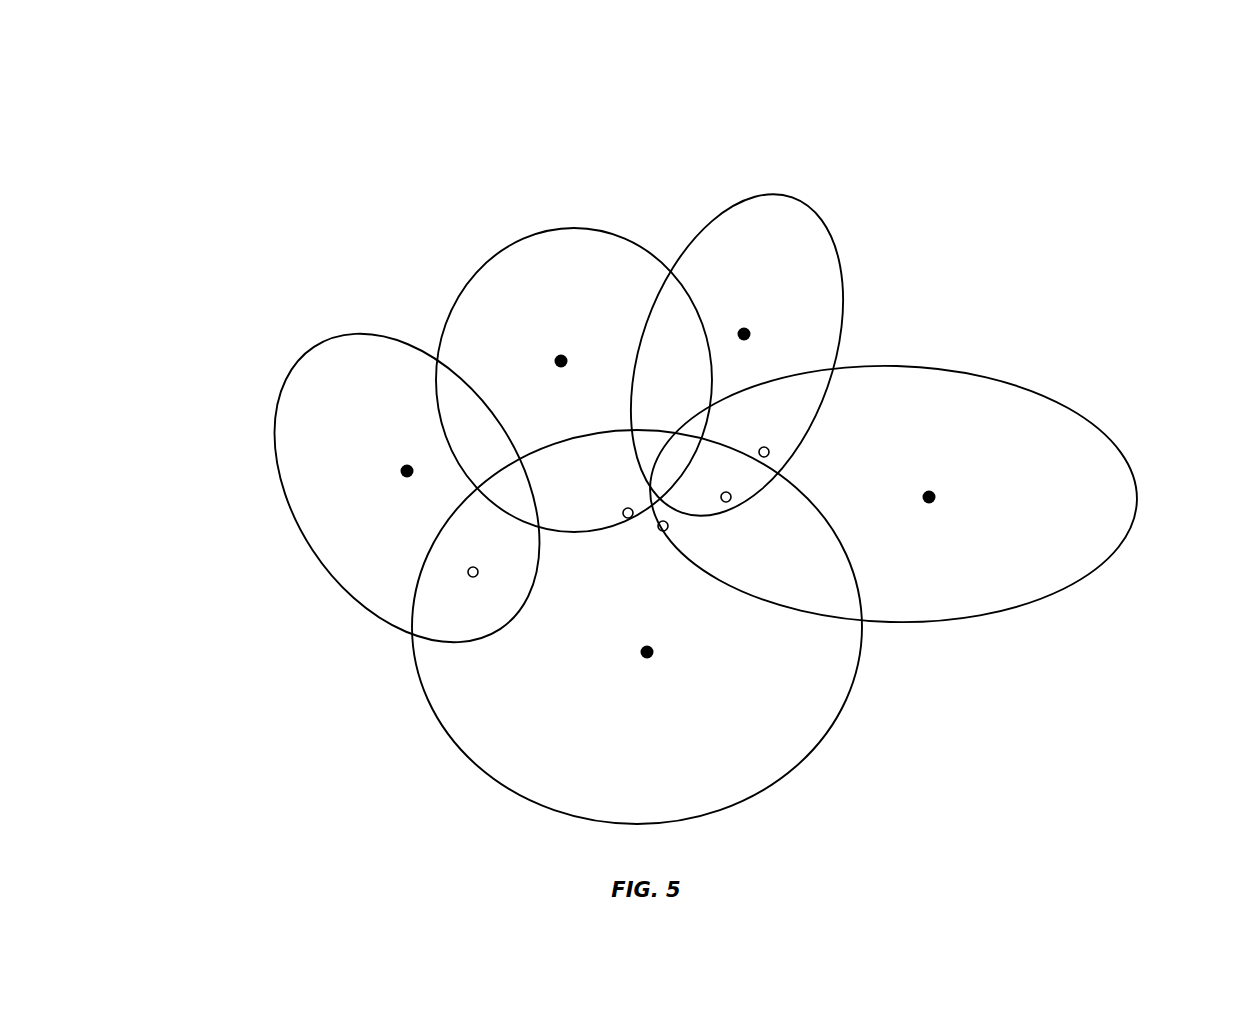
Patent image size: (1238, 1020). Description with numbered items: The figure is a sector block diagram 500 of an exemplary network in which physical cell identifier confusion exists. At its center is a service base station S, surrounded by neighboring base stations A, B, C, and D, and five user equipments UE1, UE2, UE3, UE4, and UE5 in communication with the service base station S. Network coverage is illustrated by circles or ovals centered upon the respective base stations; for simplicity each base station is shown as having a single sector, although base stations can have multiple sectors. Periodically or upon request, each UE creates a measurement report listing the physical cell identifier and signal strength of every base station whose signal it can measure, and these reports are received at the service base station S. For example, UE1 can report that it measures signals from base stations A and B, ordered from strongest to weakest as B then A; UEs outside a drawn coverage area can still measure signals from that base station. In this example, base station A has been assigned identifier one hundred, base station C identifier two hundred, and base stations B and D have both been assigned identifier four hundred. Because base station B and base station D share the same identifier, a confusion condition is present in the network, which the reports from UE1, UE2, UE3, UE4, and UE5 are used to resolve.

The sector block diagram of an exemplary network 500 is at (213, 173).
The neighboring base station A is at (574, 380).
The neighboring base station B is at (407, 488).
The neighboring base station C is at (737, 355).
The neighboring base station D is at (894, 494).
The service base station S is at (637, 627).
The user equipment UE1 is at (471, 558).
The user equipment UE2 is at (679, 541).
The user equipment UE3 is at (782, 438).
The user equipment UE4 is at (621, 500).
The user equipment UE5 is at (743, 483).